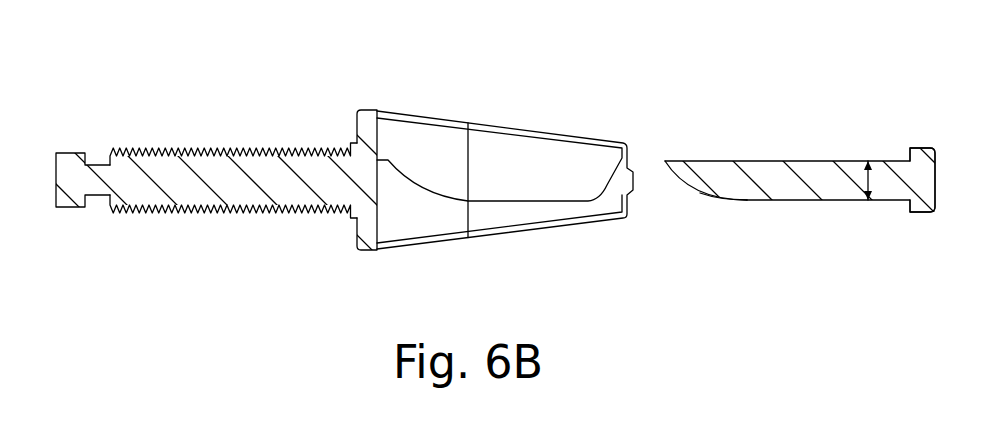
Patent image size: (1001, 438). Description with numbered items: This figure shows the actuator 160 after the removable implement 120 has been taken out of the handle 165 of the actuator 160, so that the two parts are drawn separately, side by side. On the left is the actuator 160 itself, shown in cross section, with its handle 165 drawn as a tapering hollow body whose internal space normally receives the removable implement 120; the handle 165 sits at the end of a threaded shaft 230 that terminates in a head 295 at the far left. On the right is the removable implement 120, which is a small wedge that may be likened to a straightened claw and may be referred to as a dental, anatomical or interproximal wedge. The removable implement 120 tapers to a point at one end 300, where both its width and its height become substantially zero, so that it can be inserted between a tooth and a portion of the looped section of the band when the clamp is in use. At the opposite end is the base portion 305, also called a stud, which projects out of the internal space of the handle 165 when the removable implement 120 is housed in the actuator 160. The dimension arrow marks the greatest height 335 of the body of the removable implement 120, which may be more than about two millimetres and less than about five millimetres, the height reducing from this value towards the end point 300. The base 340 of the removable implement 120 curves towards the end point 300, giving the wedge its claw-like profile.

The actuator 160 is at (92, 70).
The threaded shaft 230 is at (229, 150).
The screw head 295 is at (69, 192).
The handle 165 is at (432, 117).
The end point 300 is at (665, 161).
The removable implement 120 is at (755, 161).
The greatest height 335 is at (865, 162).
The base portion 305 is at (925, 162).
The base 340 is at (745, 201).